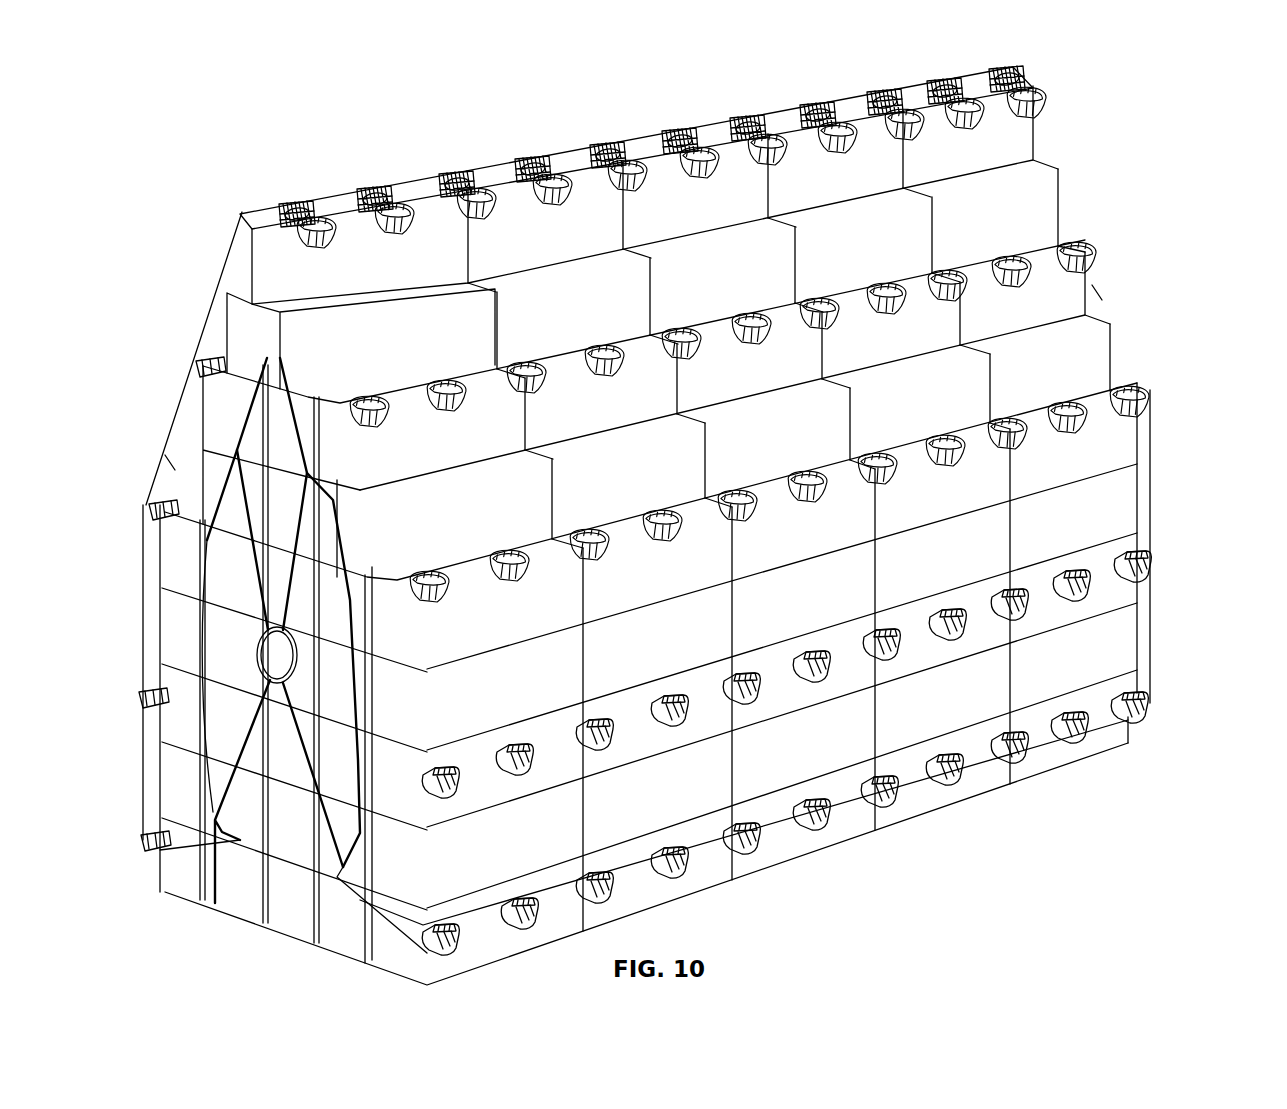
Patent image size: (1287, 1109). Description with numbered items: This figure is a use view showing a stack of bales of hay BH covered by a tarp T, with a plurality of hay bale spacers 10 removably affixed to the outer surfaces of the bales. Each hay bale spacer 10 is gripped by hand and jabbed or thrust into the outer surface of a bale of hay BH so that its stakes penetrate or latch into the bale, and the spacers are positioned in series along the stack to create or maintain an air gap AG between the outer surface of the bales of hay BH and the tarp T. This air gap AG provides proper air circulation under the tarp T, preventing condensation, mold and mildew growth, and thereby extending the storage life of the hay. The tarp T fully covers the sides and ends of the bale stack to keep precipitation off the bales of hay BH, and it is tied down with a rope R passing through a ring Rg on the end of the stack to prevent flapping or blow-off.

The hay bale spacer 10 is at (377, 184).
The tarp T is at (222, 280).
The air gap AG is at (170, 463).
The bale of hay BH is at (412, 348).
The rope R is at (343, 840).
The ring Rg is at (265, 677).